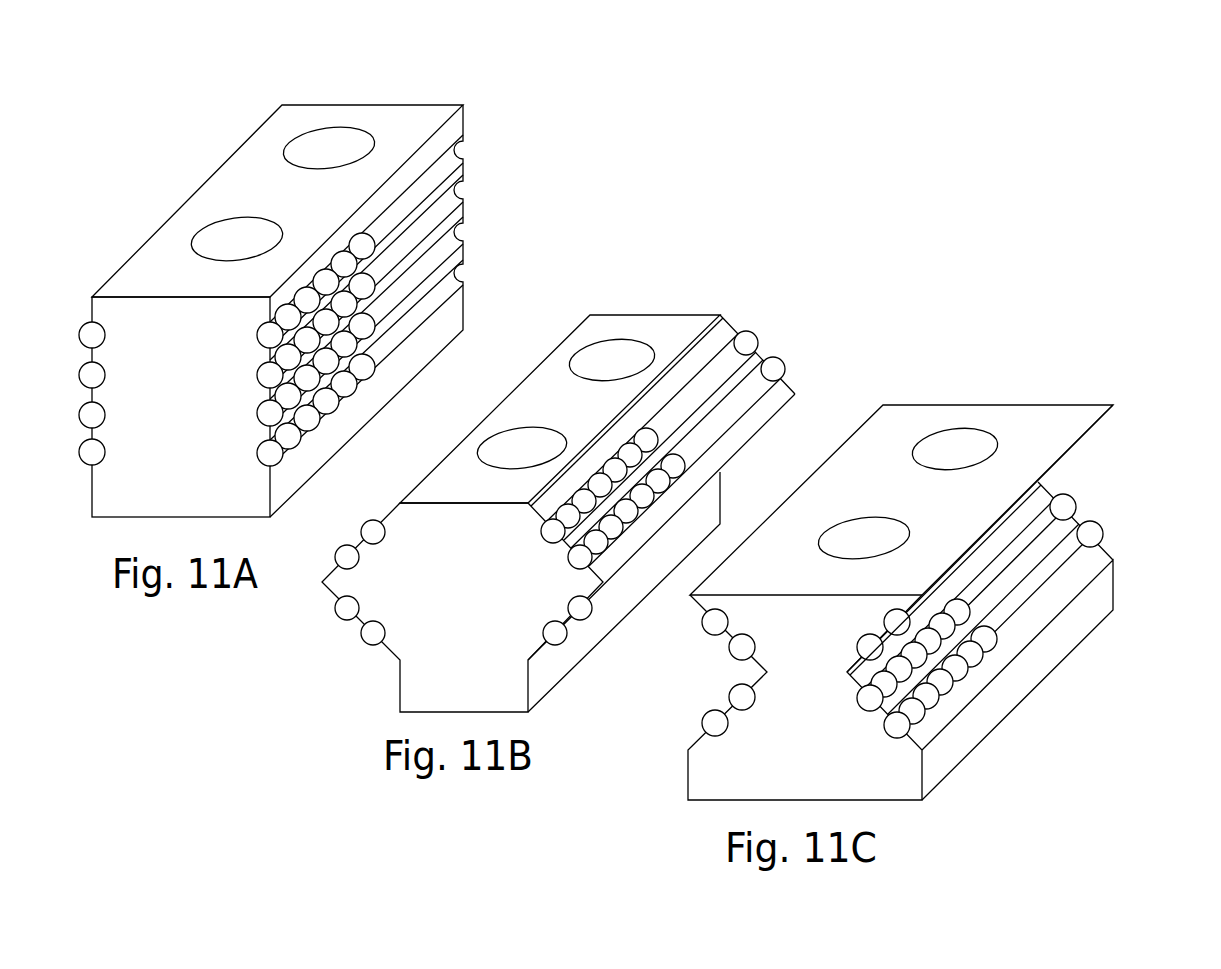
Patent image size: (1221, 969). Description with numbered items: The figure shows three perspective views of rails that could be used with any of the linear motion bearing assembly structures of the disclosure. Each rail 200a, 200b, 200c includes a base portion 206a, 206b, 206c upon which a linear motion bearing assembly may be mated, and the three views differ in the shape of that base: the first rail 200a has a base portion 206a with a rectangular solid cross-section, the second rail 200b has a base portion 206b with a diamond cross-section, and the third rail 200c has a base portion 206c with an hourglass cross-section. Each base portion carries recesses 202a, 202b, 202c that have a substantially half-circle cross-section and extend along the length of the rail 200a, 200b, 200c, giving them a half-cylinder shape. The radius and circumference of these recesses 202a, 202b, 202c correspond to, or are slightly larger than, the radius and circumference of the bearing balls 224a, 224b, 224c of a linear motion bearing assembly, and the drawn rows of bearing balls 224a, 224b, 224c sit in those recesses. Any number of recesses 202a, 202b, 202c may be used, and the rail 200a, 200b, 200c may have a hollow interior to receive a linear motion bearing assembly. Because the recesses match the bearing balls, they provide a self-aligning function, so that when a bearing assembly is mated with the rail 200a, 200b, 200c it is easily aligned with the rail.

In FIG. 11A, the rail 200a is at (330, 264).
In FIG. 11A, the base portion 206a is at (413, 107).
In FIG. 11A, the recesses 202a is at (458, 156).
In FIG. 11A, the bearing balls 224a is at (361, 264).
In FIG. 11B, the rail 200b is at (573, 461).
In FIG. 11B, the base portion 206b is at (678, 313).
In FIG. 11B, the recesses 202b is at (713, 372).
In FIG. 11B, the bearing balls 224b is at (779, 359).
In FIG. 11C, the rail 200c is at (920, 541).
In FIG. 11C, the base portion 206c is at (995, 403).
In FIG. 11C, the recesses 202c is at (1057, 573).
In FIG. 11C, the bearing balls 224c is at (1070, 500).